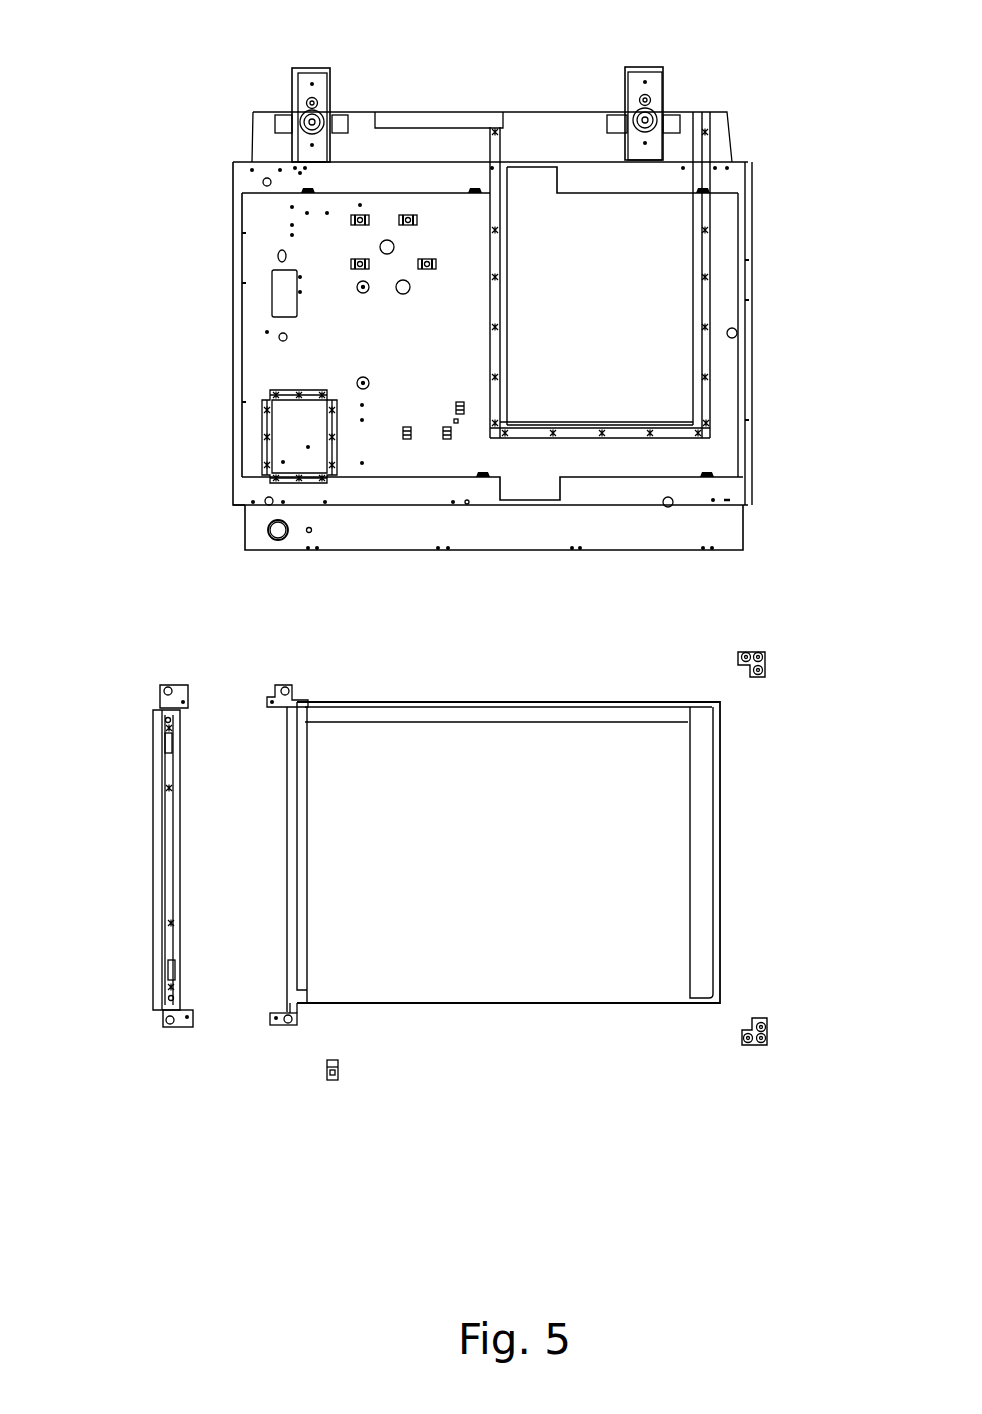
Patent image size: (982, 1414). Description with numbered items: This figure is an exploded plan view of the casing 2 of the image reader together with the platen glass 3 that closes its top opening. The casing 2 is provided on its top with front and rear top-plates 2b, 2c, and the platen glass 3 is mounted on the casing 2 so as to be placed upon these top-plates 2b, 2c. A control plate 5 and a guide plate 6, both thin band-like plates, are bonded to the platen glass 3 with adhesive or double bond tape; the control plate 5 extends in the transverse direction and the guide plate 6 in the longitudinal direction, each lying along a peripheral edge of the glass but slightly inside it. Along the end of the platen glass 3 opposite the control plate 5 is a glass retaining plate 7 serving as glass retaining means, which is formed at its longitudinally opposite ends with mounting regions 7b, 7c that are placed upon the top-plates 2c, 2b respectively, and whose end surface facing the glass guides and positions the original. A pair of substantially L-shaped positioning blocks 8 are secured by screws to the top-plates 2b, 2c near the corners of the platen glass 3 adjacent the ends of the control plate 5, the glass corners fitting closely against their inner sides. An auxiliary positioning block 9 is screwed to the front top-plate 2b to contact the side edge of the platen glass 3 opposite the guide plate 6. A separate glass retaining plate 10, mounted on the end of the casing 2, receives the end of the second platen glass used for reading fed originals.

The casing 2 is at (683, 305).
The front top-plate 2b is at (587, 492).
The rear top-plate 2c is at (395, 180).
The platen glass 3 is at (632, 742).
The control plate 5 is at (712, 870).
The guide plate 6 is at (455, 715).
The glass retaining plate 7 is at (297, 859).
The mounting region 7b is at (268, 693).
The mounting region 7c is at (278, 1028).
The positioning block 8 is at (765, 662).
The auxiliary positioning block 9 is at (338, 1072).
The glass retaining plate 10 is at (157, 807).